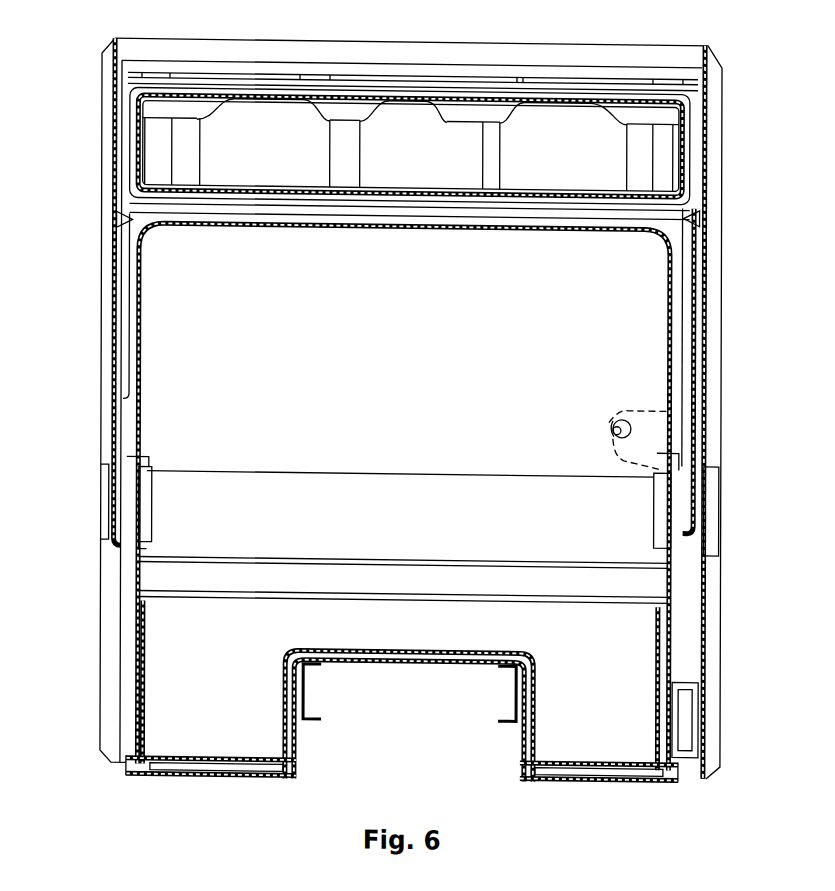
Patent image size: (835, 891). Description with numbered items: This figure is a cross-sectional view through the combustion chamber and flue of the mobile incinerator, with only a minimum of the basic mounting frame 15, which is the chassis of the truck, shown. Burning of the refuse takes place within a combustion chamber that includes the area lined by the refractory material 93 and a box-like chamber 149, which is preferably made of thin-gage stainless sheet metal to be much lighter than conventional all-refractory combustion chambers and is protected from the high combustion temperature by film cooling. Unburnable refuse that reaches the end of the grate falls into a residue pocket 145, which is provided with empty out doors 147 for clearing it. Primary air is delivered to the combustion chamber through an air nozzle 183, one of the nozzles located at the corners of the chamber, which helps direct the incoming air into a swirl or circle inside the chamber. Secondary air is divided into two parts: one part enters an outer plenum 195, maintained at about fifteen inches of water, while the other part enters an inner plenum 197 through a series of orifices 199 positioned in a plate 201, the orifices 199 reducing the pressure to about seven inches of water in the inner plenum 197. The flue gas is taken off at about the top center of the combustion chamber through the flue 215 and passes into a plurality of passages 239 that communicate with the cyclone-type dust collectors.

The mounting frame 15 is at (317, 718).
The refractory material 93 is at (152, 498).
The residue pocket 145 is at (187, 746).
The empty out doors 147 is at (245, 779).
The box-like chamber 149 is at (145, 320).
The air nozzle 183 is at (616, 415).
The outer plenum 195 is at (697, 654).
The inner plenum 197 is at (128, 589).
The orifices 199 is at (674, 524).
The plate 201 is at (702, 547).
The flue 215 is at (213, 105).
The passages 239 is at (195, 149).